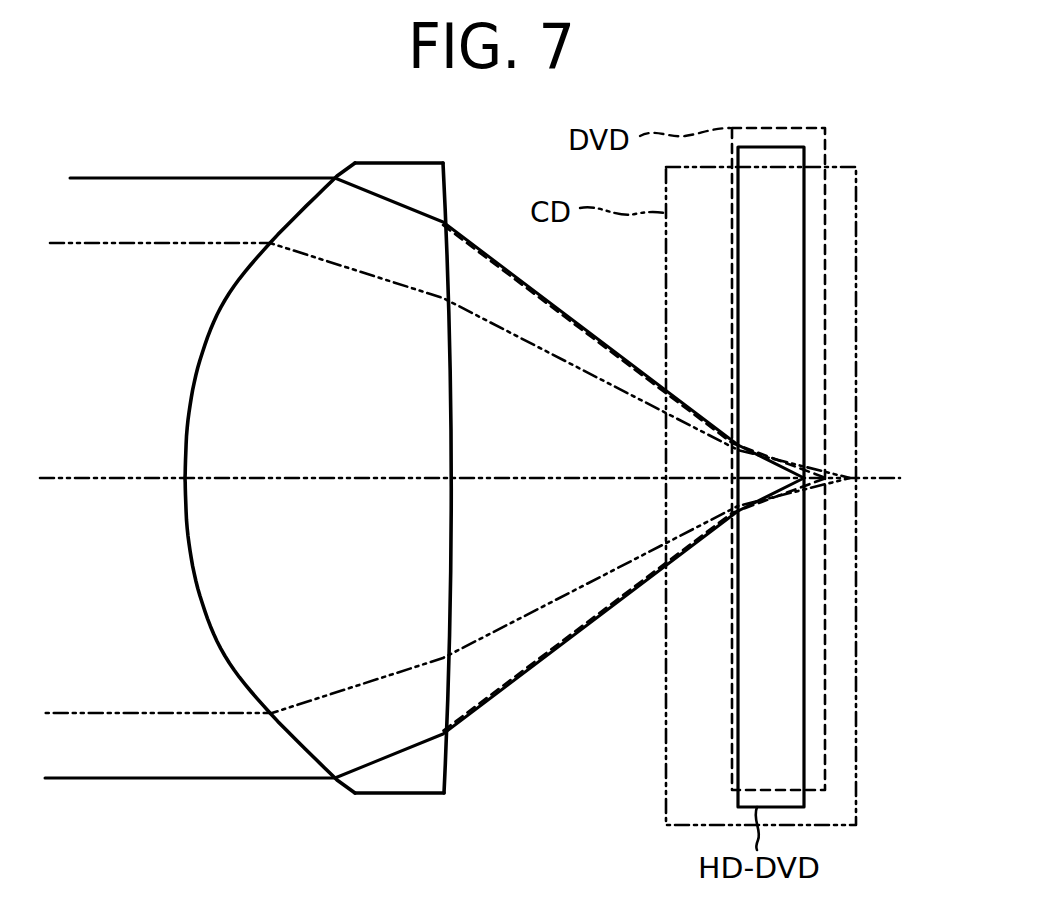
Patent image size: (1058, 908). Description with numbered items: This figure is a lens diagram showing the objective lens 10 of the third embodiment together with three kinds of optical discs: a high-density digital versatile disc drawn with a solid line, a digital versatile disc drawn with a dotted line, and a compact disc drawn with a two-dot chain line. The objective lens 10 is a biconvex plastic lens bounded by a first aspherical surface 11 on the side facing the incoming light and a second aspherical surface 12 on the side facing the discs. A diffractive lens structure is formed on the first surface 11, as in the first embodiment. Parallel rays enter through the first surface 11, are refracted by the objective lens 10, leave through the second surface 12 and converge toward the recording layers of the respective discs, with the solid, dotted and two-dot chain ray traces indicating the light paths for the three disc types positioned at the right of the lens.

The objective lens 10 is at (348, 523).
The first aspherical surface 11 is at (238, 668).
The second aspherical surface 12 is at (446, 762).